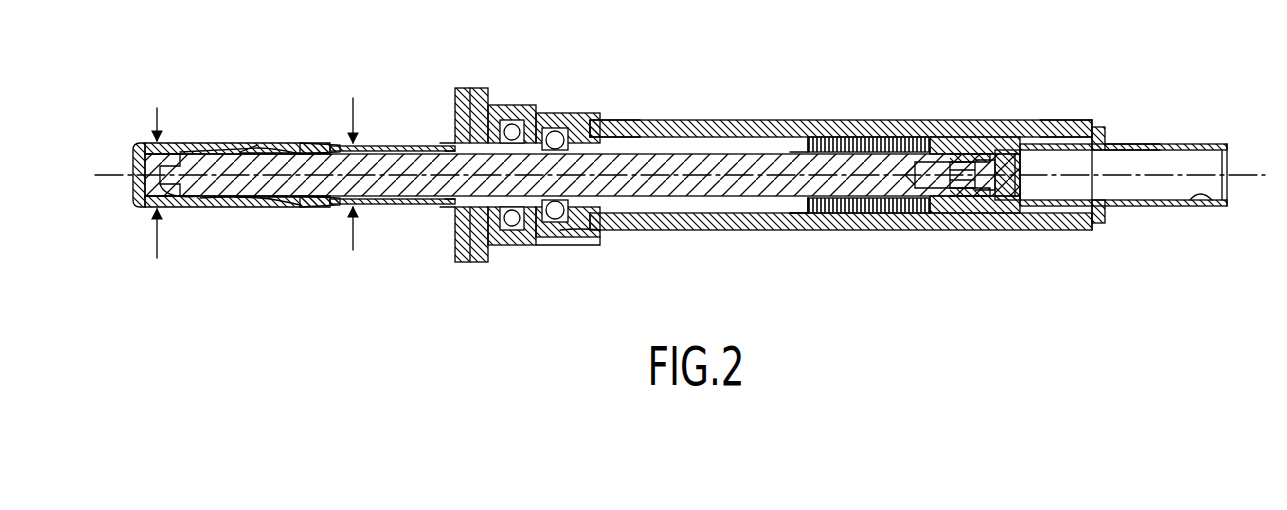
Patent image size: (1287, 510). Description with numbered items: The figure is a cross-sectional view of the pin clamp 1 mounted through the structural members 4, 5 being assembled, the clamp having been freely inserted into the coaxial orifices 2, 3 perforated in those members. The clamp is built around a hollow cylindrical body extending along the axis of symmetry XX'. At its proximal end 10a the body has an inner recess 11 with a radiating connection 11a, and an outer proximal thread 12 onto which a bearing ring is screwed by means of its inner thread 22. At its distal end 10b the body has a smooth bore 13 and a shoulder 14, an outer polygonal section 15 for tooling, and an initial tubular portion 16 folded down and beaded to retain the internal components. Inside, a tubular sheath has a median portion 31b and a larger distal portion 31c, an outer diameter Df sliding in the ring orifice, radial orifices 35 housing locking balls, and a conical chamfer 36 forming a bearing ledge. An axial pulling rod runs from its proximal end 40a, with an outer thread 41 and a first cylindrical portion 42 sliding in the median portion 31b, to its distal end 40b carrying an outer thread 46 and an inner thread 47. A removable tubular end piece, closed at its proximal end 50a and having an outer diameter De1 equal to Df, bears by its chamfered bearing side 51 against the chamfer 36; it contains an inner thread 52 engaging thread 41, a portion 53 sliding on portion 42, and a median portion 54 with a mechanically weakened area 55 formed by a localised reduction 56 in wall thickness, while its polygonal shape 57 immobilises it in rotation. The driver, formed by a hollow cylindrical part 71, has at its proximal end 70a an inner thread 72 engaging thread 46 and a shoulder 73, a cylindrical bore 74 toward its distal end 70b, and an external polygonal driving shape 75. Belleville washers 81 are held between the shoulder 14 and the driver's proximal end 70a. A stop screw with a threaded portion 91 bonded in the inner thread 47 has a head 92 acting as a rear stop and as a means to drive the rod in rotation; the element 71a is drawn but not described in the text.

The pin clamp 1 is at (712, 86).
The orifice 2 is at (453, 220).
The orifice 3 is at (478, 110).
The structural member 4 is at (457, 90).
The structural member 5 is at (478, 265).
The proximal end 10a is at (608, 120).
The distal end 10b is at (1068, 232).
The inner recess 11 is at (535, 112).
The radiating connection 11a is at (559, 240).
The outer proximal thread 12 is at (584, 238).
The smooth bore 13 is at (655, 120).
The shoulder 14 is at (806, 120).
The outer polygonal section 15 is at (1050, 120).
The initial tubular portion 16 is at (1100, 127).
The inner thread 22 is at (566, 113).
The median portion 31b is at (455, 150).
The distal portion 31c is at (533, 245).
The radial orifices 35 is at (610, 228).
The conical chamfer 36 is at (330, 205).
The proximal end 40a is at (143, 143).
The distal end 40b is at (885, 232).
The outer thread 41 is at (200, 197).
The first cylindrical portion 42 is at (262, 160).
The outer thread 46 is at (942, 140).
The inner thread 47 is at (957, 215).
The proximal end 50a is at (137, 200).
The chamfered bearing side 51 is at (318, 148).
The inner thread 52 is at (183, 150).
The portion 53 is at (400, 204).
The median portion 54 is at (252, 198).
The mechanically weakened area 55 is at (258, 147).
The localised reduction 56 is at (285, 190).
The polygonal shape 57 is at (400, 146).
The proximal end 70a is at (906, 137).
The distal end 70b is at (1185, 144).
The hollow cylindrical part 71 is at (1135, 144).
The nut lower 71a is at (932, 230).
The inner thread 72 is at (965, 142).
The shoulder 73 is at (1015, 225).
The cylindrical bore 74 is at (1210, 207).
The polygonal driving shape 75 is at (1166, 207).
The Belleville-type coaxial elastic washers 81 is at (856, 137).
The threaded portion 91 is at (987, 215).
The head 92 is at (995, 142).
The outer diameter Df is at (337, 163).
The outer diameter De1 is at (160, 196).
The axis of symmetry XX' is at (680, 114).